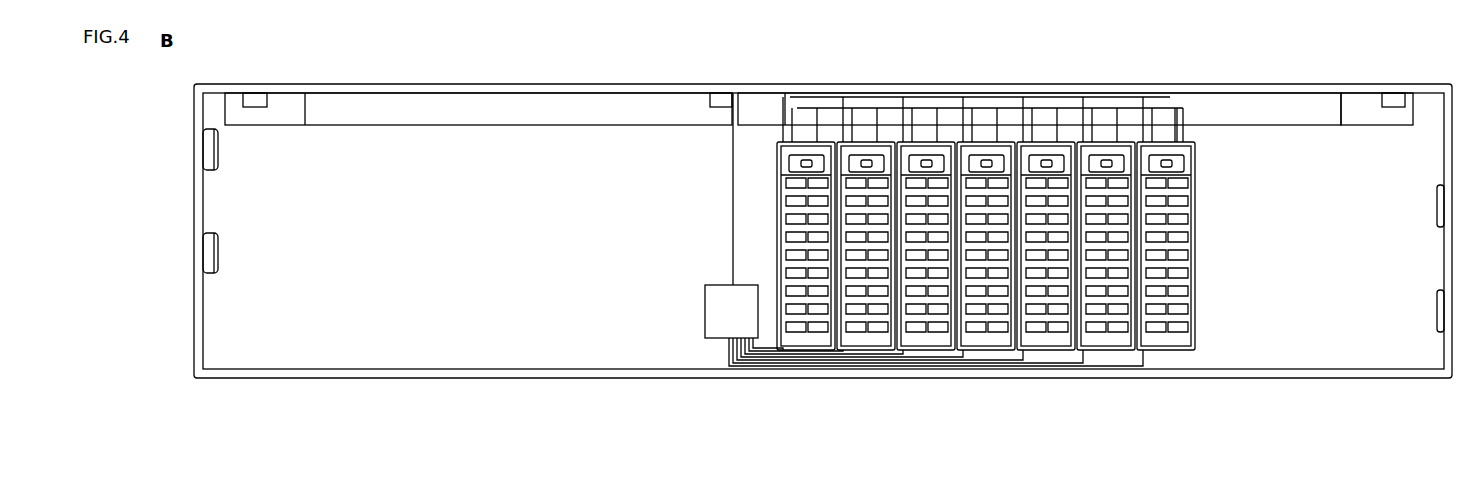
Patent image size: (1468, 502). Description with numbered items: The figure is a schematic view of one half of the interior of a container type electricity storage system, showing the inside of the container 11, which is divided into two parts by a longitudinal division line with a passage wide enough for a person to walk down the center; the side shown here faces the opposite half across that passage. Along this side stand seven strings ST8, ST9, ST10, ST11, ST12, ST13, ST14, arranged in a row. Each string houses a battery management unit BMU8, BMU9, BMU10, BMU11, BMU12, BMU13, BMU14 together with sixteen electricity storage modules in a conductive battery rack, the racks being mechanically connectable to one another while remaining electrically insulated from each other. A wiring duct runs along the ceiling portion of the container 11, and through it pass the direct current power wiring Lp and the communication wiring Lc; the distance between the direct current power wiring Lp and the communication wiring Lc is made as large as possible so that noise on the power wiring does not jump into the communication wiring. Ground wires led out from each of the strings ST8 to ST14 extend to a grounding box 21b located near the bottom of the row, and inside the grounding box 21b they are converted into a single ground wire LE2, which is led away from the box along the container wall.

The container 11 is at (341, 84).
The grounding box 21b is at (714, 333).
The ground wire LE2 is at (733, 255).
The string ST8 is at (793, 347).
The string ST9 is at (853, 347).
The string ST10 is at (913, 347).
The string ST11 is at (973, 347).
The string ST12 is at (1033, 347).
The string ST13 is at (1093, 347).
The string ST14 is at (1153, 347).
The battery management unit BMU8 is at (792, 158).
The battery management unit BMU9 is at (853, 158).
The battery management unit BMU10 is at (913, 158).
The battery management unit BMU11 is at (973, 158).
The battery management unit BMU12 is at (1033, 158).
The battery management unit BMU13 is at (1093, 158).
The battery management unit BMU14 is at (1183, 142).
The direct current power wiring Lp is at (1152, 108).
The communication wiring Lc is at (1118, 93).